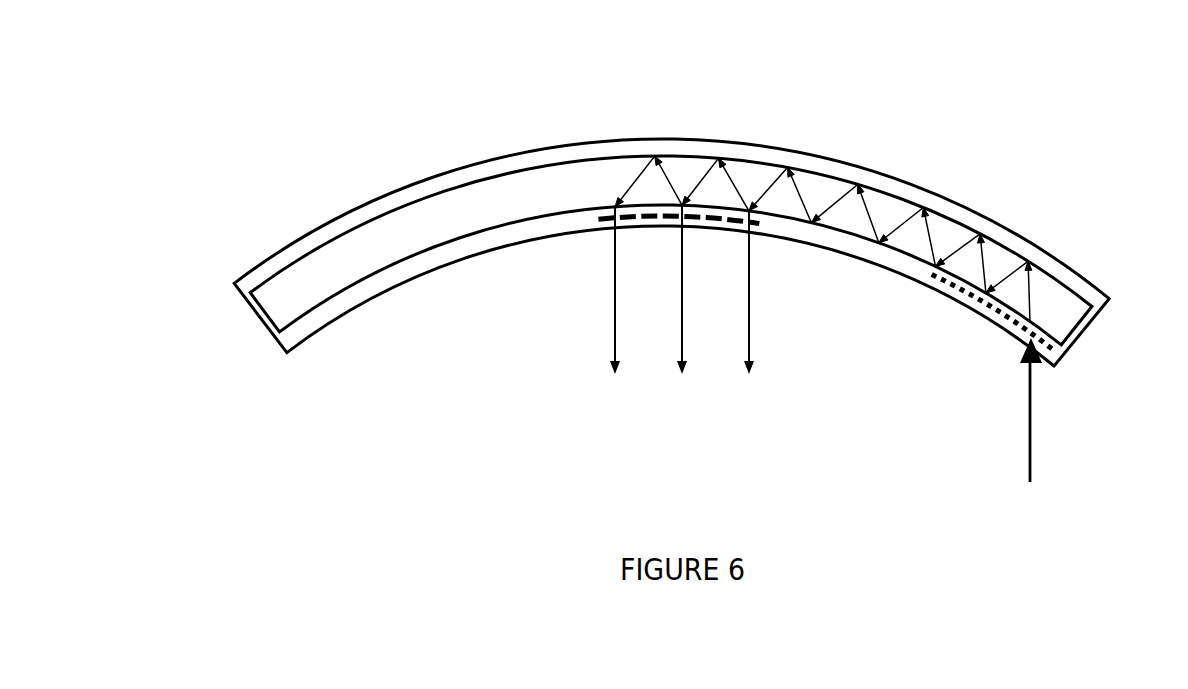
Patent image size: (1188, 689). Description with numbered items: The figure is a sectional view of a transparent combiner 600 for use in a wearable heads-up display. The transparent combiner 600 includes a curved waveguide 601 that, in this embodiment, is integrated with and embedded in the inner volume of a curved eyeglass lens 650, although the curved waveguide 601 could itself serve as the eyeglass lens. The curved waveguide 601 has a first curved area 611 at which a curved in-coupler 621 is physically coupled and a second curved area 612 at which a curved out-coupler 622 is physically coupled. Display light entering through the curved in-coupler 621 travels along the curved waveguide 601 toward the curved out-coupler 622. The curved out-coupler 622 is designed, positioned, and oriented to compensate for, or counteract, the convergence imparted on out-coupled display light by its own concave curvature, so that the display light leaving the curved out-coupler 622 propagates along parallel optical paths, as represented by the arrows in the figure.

The transparent combiner 600 is at (246, 111).
The curved waveguide 601 is at (250, 304).
The curved eyeglass lens 650 is at (282, 347).
The first curved area 611 is at (1033, 316).
The second curved area 612 is at (668, 204).
The curved in-coupler 621 is at (963, 288).
The curved out-coupler 622 is at (605, 218).